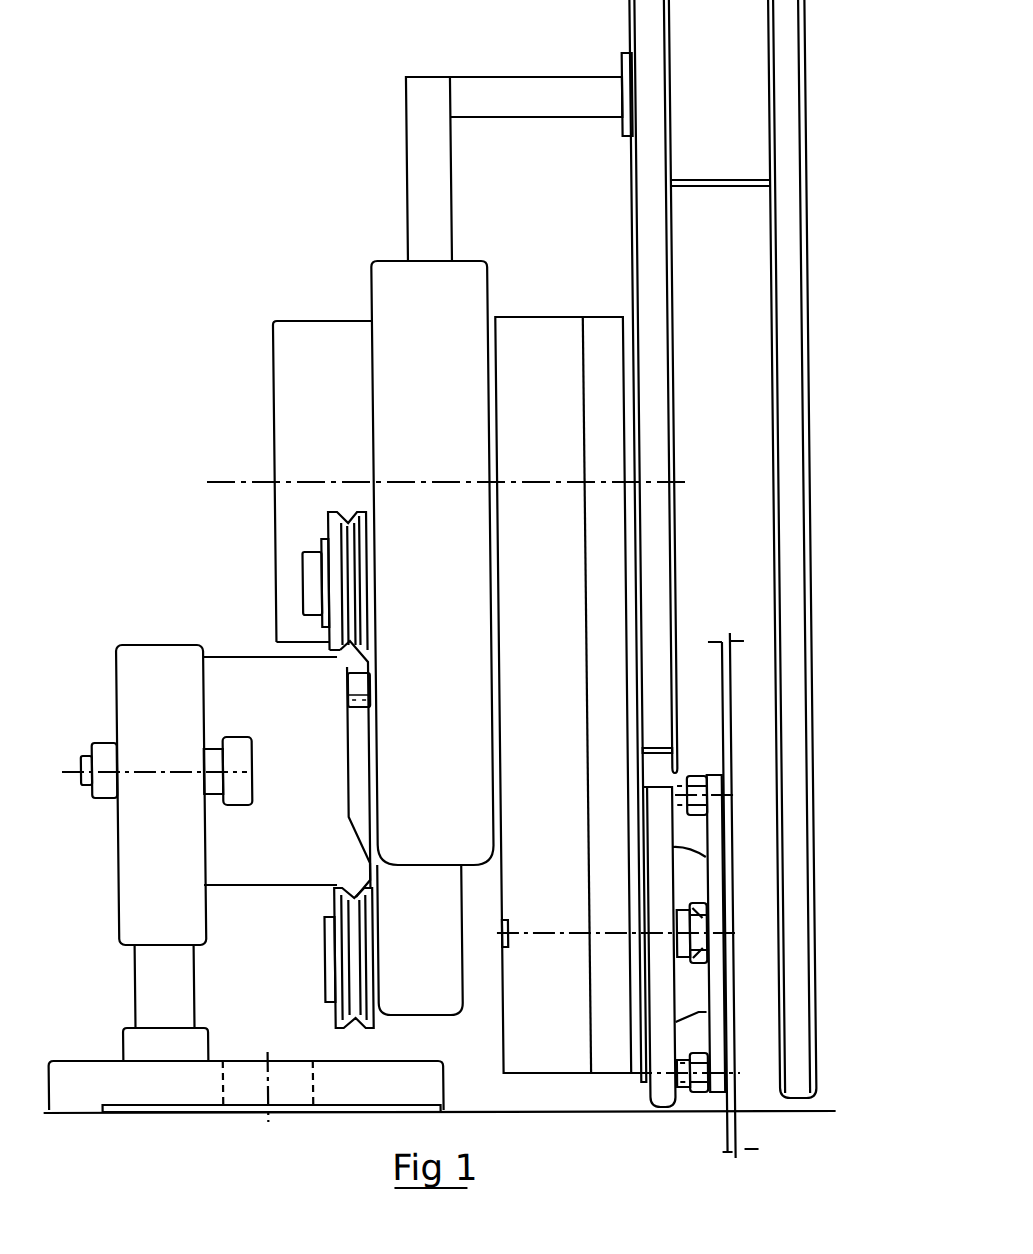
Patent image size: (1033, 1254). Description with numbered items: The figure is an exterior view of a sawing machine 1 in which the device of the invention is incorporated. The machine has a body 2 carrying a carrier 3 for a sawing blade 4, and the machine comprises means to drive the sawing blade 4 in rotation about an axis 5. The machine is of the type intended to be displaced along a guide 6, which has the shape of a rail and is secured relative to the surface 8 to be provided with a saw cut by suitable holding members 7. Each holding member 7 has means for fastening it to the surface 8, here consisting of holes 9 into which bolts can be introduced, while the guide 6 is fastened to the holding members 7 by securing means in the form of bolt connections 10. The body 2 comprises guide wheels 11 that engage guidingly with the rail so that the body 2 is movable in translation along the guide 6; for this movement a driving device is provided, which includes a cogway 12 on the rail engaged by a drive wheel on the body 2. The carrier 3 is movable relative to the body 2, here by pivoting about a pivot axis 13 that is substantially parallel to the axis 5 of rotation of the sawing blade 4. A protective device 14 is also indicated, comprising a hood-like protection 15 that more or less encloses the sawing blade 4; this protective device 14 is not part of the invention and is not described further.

The sawing machine 1 is at (332, 263).
The body 2 is at (410, 1017).
The carrier 3 is at (514, 1000).
The sawing blade 4 is at (728, 708).
The axis 5 is at (551, 926).
The guide 6 is at (257, 688).
The holding members 7 is at (106, 692).
The surface 8 is at (567, 1111).
The holes 9 is at (223, 1082).
The bolt connections 10 is at (104, 797).
The guide wheels 11 is at (357, 567).
The cogway 12 is at (359, 708).
The pivot axis 13 is at (414, 480).
The protective device 14 is at (398, 78).
The hood-like protection 15 is at (664, 232).